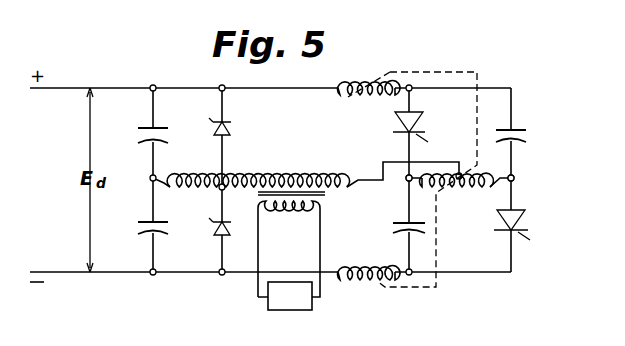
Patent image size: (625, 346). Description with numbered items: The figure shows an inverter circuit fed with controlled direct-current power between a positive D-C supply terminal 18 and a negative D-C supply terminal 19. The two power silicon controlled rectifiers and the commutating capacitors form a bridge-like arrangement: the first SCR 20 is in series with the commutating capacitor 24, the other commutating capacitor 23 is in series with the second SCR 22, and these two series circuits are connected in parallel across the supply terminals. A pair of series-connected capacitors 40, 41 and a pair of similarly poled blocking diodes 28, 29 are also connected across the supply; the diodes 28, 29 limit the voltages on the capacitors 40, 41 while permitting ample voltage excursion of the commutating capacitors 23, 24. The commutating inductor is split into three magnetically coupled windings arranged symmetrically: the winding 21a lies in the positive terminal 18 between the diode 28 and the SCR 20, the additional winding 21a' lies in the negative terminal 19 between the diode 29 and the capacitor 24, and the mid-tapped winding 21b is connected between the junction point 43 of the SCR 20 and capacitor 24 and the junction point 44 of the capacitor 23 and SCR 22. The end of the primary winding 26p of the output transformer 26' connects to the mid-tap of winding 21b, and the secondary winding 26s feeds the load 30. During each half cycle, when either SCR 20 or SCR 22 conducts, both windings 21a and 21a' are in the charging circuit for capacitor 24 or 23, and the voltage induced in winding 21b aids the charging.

The positive D-C supply terminal 18 is at (112, 83).
The negative D-C supply terminal 19 is at (115, 275).
The capacitor 40 is at (150, 127).
The capacitor 41 is at (150, 221).
The blocking diode 28 is at (218, 121).
The blocking diode 29 is at (218, 222).
The primary winding 26p is at (286, 173).
The transformer 26' is at (277, 203).
The secondary winding 26s is at (288, 213).
The load 30 is at (268, 303).
The inductor half 21a is at (348, 97).
The inductor winding 21a' is at (368, 288).
The inductor half 21b is at (466, 189).
The first power silicon controlled rectifier 20 is at (403, 119).
The junction point 43 is at (405, 181).
The commutating capacitor 24 is at (394, 223).
The commutating capacitor 23 is at (514, 131).
The junction point 44 is at (514, 178).
The second power silicon controlled rectifier 22 is at (517, 213).